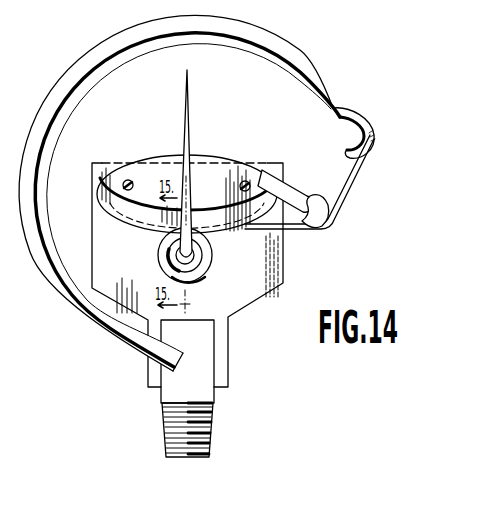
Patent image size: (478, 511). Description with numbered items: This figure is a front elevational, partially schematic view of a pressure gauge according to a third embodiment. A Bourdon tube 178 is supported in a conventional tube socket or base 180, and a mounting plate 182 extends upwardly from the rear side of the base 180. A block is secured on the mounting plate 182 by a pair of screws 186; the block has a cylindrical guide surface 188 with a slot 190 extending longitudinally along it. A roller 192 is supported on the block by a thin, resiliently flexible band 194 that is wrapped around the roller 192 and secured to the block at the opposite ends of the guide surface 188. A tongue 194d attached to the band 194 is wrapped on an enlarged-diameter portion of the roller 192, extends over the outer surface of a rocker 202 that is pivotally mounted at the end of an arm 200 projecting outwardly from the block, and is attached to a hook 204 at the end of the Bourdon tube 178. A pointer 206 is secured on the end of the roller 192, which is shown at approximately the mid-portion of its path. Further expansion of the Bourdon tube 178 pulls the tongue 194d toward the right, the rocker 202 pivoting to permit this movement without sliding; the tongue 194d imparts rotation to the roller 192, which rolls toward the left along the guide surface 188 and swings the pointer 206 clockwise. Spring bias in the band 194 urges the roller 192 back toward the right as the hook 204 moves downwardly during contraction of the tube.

The Bourdon tube 178 is at (78, 88).
The tube socket or base 180 is at (207, 345).
The mounting plate 182 is at (252, 300).
The screws 186 is at (129, 180).
The cylindrical guide surface 188 is at (143, 224).
The slot 190 is at (228, 202).
The roller 192 is at (200, 253).
The band 194 is at (112, 212).
The tongue 194d is at (297, 230).
The arm 200 is at (288, 192).
The rocker 202 is at (327, 208).
The hook 204 is at (375, 141).
The pointer 206 is at (189, 110).